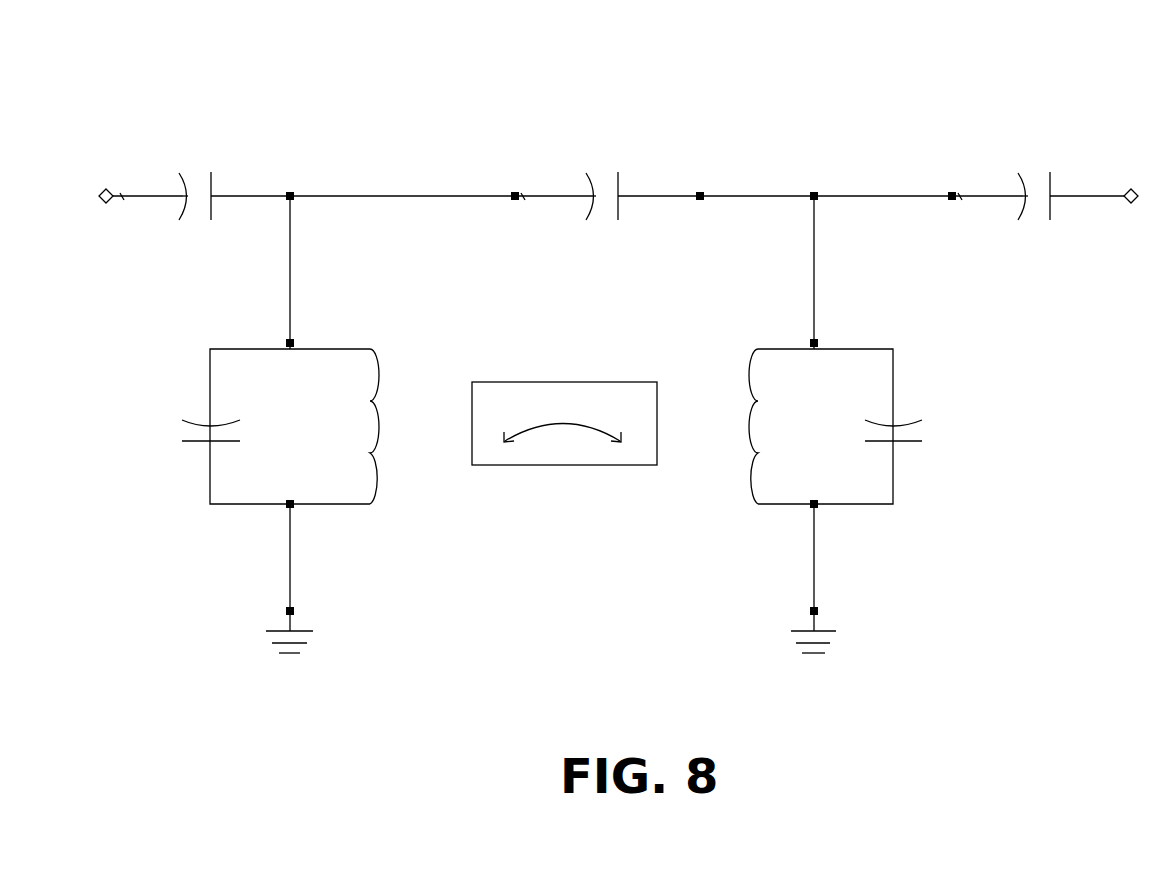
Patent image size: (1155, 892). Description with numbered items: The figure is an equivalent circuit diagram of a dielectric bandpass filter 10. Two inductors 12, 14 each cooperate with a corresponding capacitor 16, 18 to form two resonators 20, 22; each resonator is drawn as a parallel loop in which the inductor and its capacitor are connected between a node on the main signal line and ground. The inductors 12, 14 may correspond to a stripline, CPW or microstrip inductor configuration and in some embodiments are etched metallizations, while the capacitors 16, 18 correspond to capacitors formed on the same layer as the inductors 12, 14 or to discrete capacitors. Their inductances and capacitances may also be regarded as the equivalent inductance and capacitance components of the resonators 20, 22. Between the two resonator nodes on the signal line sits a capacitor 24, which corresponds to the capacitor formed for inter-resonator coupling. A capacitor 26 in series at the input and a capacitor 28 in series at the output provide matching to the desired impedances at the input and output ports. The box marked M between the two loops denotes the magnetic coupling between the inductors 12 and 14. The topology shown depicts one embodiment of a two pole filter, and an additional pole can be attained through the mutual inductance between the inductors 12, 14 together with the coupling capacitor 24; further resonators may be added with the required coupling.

The dielectric bandpass filter 10 is at (1012, 95).
The inductor 12 is at (400, 346).
The inductor 14 is at (740, 384).
The capacitor 16 is at (174, 433).
The capacitor 18 is at (931, 432).
The resonator 20 is at (172, 614).
The resonator 22 is at (950, 577).
The capacitor 24 is at (596, 172).
The capacitor 26 is at (196, 172).
The capacitor 28 is at (1040, 172).